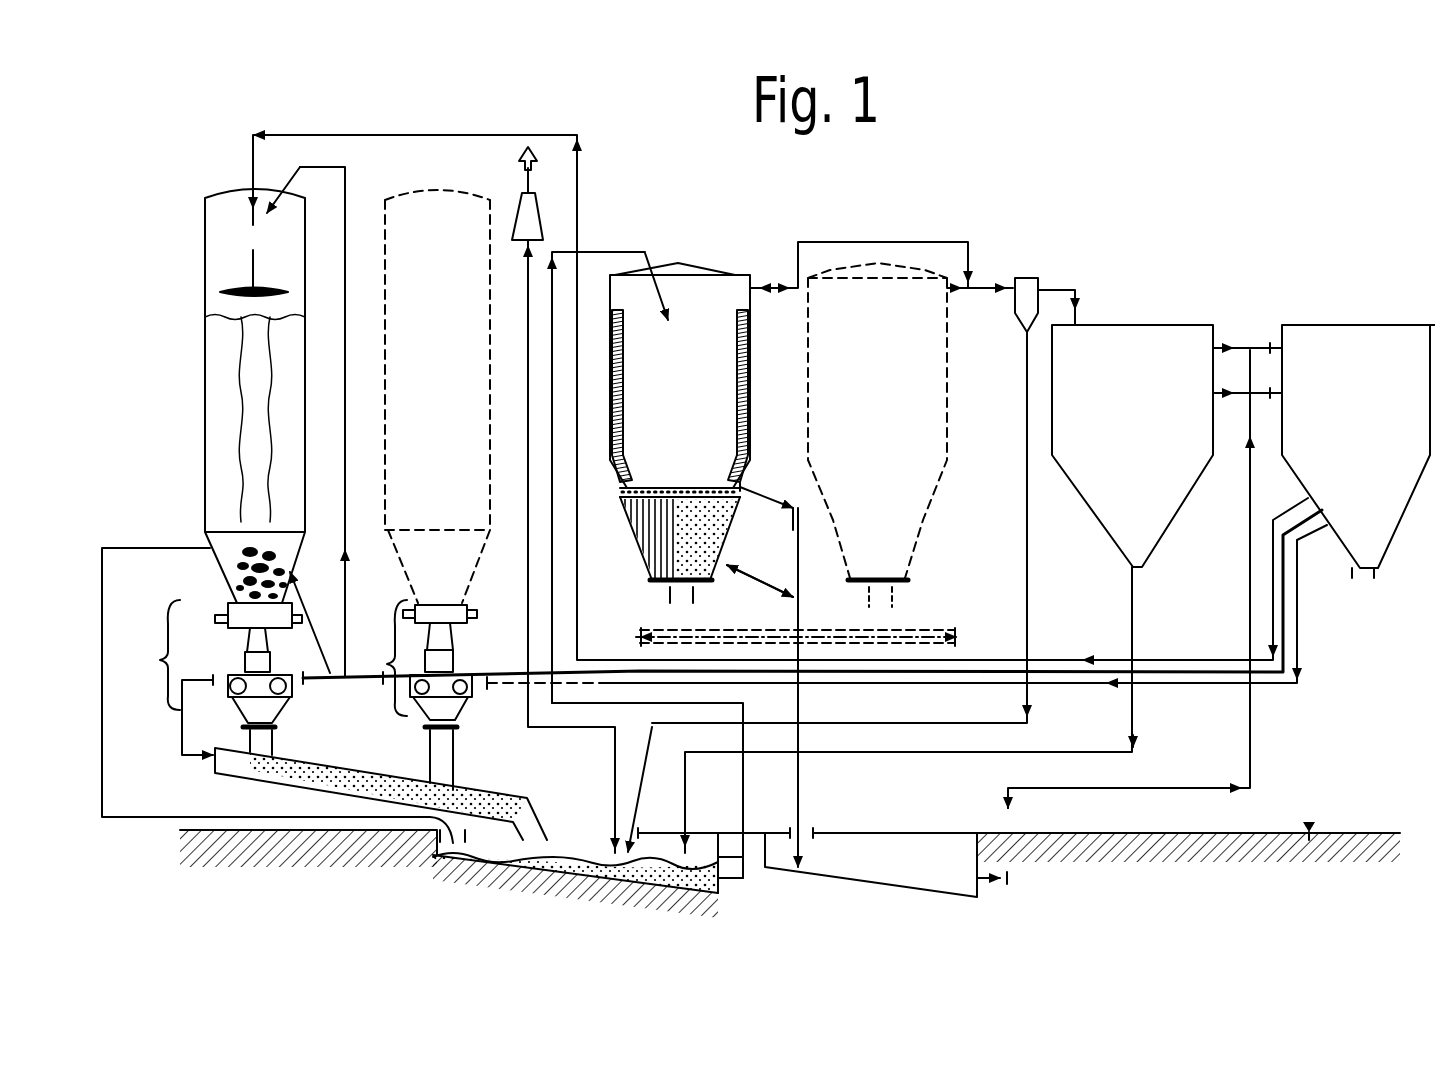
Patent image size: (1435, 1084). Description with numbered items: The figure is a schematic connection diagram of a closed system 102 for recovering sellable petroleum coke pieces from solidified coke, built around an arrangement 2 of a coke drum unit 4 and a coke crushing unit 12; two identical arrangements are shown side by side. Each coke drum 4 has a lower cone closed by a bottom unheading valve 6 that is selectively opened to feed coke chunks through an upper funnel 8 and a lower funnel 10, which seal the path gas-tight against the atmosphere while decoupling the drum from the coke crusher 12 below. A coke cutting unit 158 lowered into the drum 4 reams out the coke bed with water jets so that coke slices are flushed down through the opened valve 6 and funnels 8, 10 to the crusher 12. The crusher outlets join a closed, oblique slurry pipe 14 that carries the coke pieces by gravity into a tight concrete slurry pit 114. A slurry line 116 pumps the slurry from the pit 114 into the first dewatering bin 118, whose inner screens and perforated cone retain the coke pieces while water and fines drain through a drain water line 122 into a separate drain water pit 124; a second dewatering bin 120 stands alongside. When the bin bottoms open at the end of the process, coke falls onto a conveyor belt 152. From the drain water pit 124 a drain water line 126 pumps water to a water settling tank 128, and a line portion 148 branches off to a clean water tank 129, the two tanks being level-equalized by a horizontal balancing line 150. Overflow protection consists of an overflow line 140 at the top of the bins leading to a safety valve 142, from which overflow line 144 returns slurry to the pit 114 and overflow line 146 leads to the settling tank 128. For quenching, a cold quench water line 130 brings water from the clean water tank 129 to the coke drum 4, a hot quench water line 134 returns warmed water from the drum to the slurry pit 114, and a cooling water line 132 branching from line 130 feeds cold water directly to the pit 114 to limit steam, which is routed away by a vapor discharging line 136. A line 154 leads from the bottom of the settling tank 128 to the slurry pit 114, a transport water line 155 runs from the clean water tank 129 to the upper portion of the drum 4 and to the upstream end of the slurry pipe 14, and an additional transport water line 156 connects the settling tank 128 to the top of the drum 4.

The closed system 102 is at (198, 140).
The arrangement 2 is at (265, 658).
The coke drum 4 is at (205, 342).
The bottom unheading valve 6 is at (230, 602).
The upper funnel 8 is at (247, 638).
The lower funnel 10 is at (245, 660).
The coke crusher 12 is at (238, 694).
The slurry pipe 14 is at (320, 793).
The slurry pit 114 is at (582, 835).
The slurry line 116 is at (554, 368).
The dewatering bin 118 is at (725, 272).
The dewatering bin 120 is at (920, 270).
The drain water line 122 is at (798, 705).
The drain water pit 124 is at (960, 883).
The drain water line 126 is at (1252, 738).
The water settling tank 128 is at (1170, 323).
The clean water tank 129 is at (1360, 318).
The cold quench water line 130 is at (1068, 672).
The slurry pit cooling water line 132 is at (514, 193).
The hot quench water line 134 is at (277, 695).
The vapor discharging line 136 is at (528, 430).
The overflow line 140 is at (883, 261).
The safety valve 142 is at (1031, 278).
The overflow line 144 is at (852, 601).
The overflow line 146 is at (1075, 298).
The line portion 148 is at (1262, 346).
The horizontal balancing line 150 is at (1262, 399).
The conveyor belt 152 is at (940, 633).
The line 154 is at (780, 752).
The transport water line 155 is at (1172, 687).
The additional transport water line 156 is at (1170, 660).
The coke cutting unit 158 is at (232, 290).